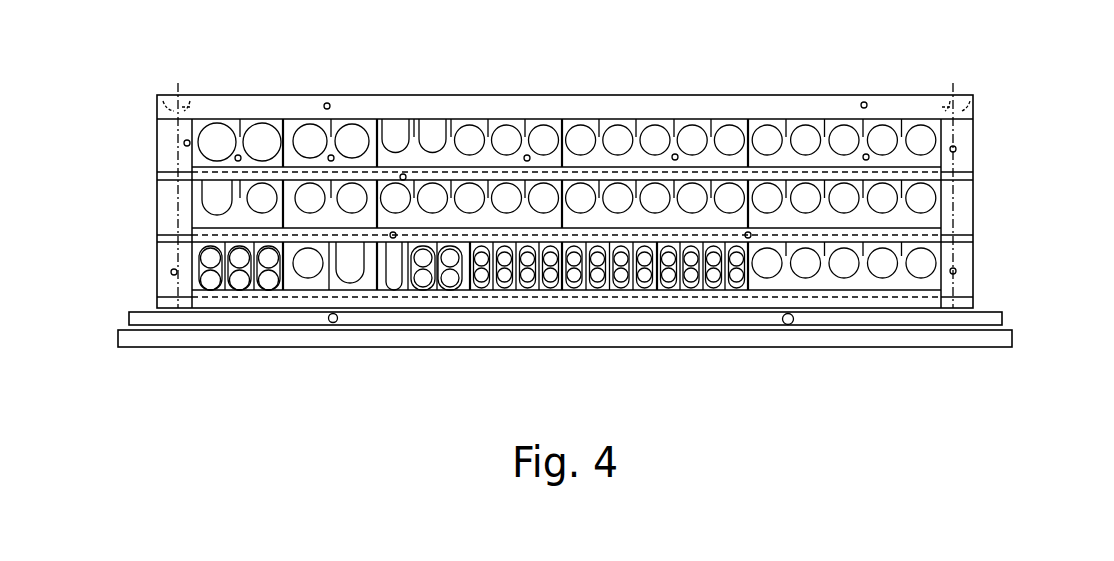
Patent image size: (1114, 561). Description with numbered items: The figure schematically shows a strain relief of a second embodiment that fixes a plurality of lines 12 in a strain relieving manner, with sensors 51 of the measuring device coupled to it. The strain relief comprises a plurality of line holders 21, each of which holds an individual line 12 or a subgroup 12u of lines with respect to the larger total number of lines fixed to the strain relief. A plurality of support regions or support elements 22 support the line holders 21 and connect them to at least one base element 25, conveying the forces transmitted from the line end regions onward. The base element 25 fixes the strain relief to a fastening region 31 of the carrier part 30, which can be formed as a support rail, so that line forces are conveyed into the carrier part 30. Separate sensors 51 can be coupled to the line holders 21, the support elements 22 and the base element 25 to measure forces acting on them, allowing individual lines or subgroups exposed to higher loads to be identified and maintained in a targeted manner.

The line 12 is at (660, 138).
The subgroup of lines 12u is at (258, 138).
The line holder 21 is at (750, 142).
The support region 22 is at (460, 232).
The base element 25 is at (168, 200).
The carrier part 30 is at (1012, 335).
The fastening region 31 is at (1002, 315).
The sensor 51 is at (402, 173).